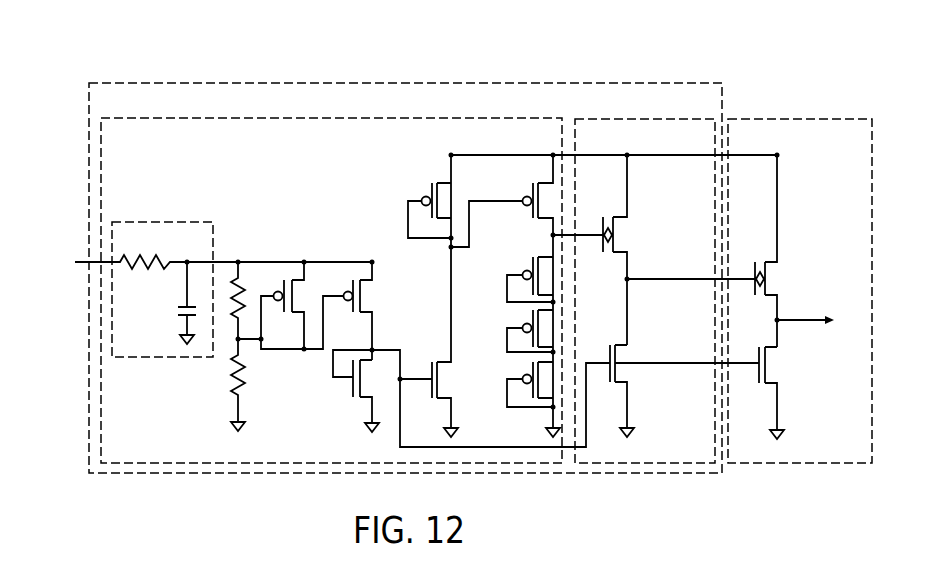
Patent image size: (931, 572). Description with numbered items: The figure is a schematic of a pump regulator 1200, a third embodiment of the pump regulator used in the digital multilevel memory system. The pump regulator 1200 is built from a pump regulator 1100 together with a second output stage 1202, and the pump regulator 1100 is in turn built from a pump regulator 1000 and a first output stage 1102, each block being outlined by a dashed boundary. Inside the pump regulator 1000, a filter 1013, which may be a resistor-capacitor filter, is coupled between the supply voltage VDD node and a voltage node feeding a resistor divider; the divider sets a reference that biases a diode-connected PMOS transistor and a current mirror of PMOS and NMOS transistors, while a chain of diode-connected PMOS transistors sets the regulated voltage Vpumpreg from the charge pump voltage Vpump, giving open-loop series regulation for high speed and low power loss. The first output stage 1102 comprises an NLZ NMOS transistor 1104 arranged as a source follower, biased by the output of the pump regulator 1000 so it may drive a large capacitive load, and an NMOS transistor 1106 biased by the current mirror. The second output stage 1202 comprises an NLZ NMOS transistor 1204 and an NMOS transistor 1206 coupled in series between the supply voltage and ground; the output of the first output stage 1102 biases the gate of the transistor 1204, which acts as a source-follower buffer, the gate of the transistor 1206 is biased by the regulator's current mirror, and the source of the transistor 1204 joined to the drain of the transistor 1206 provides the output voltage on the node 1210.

The pump regulator 1200 is at (710, 58).
The pump regulator 1100 is at (453, 106).
The pump regulator 1000 is at (335, 145).
The filter 1013 is at (171, 338).
The first output stage 1102 is at (680, 146).
The NLZ NMOS transistor 1104 is at (620, 233).
The NMOS transistor 1106 is at (628, 363).
The second output stage 1202 is at (837, 148).
The NLZ NMOS transistor 1204 is at (772, 282).
The NMOS transistor 1206 is at (775, 365).
The node 1210 is at (817, 330).